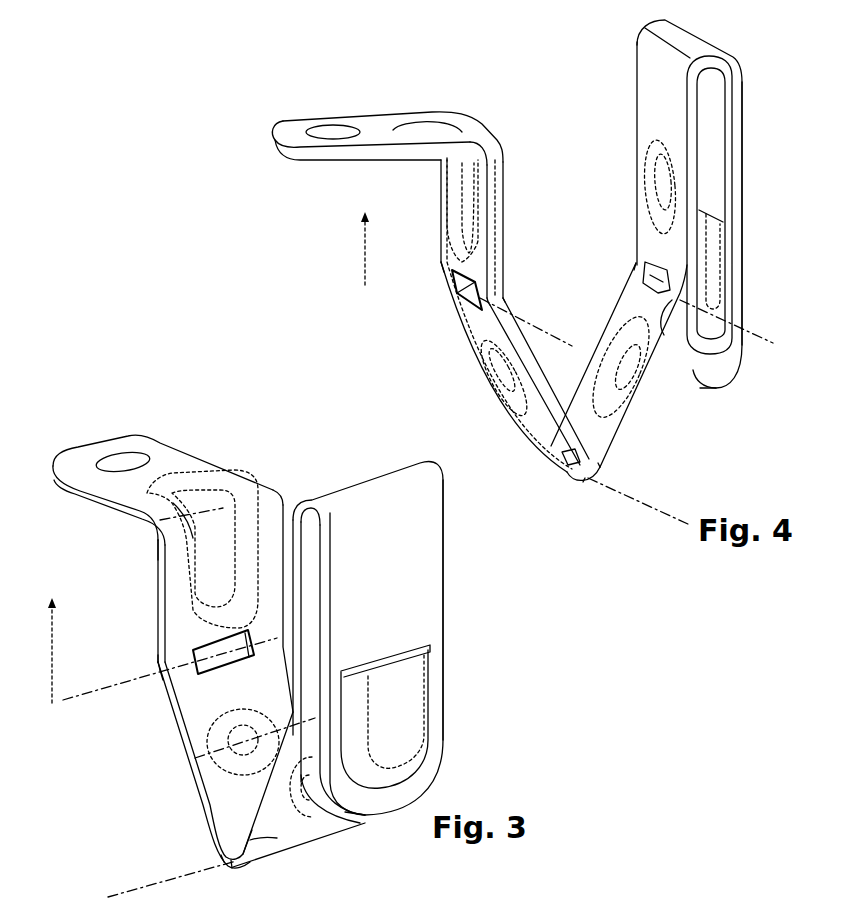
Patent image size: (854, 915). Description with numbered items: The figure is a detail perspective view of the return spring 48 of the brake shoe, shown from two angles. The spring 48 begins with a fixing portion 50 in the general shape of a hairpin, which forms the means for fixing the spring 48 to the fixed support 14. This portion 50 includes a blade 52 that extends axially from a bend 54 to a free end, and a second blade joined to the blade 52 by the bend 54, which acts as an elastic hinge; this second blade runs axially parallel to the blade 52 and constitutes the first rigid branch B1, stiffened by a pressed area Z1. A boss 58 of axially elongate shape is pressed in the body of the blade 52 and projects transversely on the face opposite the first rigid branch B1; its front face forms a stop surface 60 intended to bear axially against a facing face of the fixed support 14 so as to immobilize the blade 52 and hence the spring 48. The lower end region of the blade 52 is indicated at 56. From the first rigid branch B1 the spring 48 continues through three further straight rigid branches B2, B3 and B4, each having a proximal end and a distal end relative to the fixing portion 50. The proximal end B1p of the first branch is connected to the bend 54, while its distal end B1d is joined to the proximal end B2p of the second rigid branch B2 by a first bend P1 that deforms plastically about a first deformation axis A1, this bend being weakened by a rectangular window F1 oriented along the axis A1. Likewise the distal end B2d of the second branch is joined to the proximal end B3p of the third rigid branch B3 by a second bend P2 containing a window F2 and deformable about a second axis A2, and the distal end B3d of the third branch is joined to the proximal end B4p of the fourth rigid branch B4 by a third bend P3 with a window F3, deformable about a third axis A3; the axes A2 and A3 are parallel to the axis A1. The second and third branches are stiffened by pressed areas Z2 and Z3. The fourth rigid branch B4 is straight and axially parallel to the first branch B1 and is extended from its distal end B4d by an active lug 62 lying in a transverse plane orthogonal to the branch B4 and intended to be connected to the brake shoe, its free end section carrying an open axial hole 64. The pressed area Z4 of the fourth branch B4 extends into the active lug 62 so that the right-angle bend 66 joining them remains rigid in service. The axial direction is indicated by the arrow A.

In FIG. 4, the fixed support 14 is at (116, 2).
In FIG. 4, the return spring 48 is at (535, 105).
In FIG. 3, the return spring 48 is at (326, 455).
In FIG. 4, the fixing portion 50 is at (752, 80).
In FIG. 3, the fixing portion 50 is at (368, 638).
In FIG. 4, the blade 52 is at (757, 148).
In FIG. 3, the blade 52 is at (460, 610).
In FIG. 4, the bend 54 is at (690, 58).
In FIG. 3, the bend 54 is at (390, 470).
In FIG. 4, the clip lower end 56 is at (722, 388).
In FIG. 4, the boss 58 is at (714, 287).
In FIG. 3, the boss 58 is at (398, 690).
In FIG. 4, the stop surface 60 is at (742, 217).
In FIG. 3, the stop surface 60 is at (427, 648).
In FIG. 4, the active lug 62 is at (366, 104).
In FIG. 3, the active lug 62 is at (172, 445).
In FIG. 4, the open axial hole 64 is at (333, 130).
In FIG. 3, the open axial hole 64 is at (123, 460).
In FIG. 4, the right-angle bend 66 is at (500, 152).
In FIG. 3, the right-angle bend 66 is at (267, 486).
In FIG. 4, the direction A is at (357, 248).
In FIG. 3, the direction A is at (44, 650).
In FIG. 4, the first deformation axis A1 is at (752, 338).
In FIG. 3, the first deformation axis A1 is at (260, 713).
In FIG. 4, the second deformation axis A2 is at (665, 520).
In FIG. 3, the second deformation axis A2 is at (115, 892).
In FIG. 4, the third deformation axis A3 is at (555, 333).
In FIG. 3, the third deformation axis A3 is at (80, 697).
In FIG. 4, the first rigid branch B1 is at (628, 133).
In FIG. 3, the first rigid branch B1 is at (320, 582).
In FIG. 4, the proximal end of the first rigid branch B1p is at (686, 152).
In FIG. 3, the proximal end of the first rigid branch B1p is at (297, 565).
In FIG. 4, the distal end of the first rigid branch B1d is at (692, 275).
In FIG. 3, the distal end of the first rigid branch B1d is at (337, 657).
In FIG. 4, the second rigid branch B2 is at (625, 295).
In FIG. 3, the second rigid branch B2 is at (210, 837).
In FIG. 4, the proximal end of the second rigid branch B2p is at (662, 318).
In FIG. 3, the proximal end of the second rigid branch B2p is at (235, 807).
In FIG. 4, the distal end of the second rigid branch B2d is at (625, 465).
In FIG. 3, the distal end of the second rigid branch B2d is at (277, 838).
In FIG. 4, the third rigid branch B3 is at (505, 435).
In FIG. 3, the third rigid branch B3 is at (170, 772).
In FIG. 4, the proximal end of the third rigid branch B3p is at (560, 462).
In FIG. 3, the proximal end of the third rigid branch B3p is at (222, 857).
In FIG. 4, the distal end of the third rigid branch B3d is at (492, 322).
In FIG. 3, the distal end of the third rigid branch B3d is at (160, 683).
In FIG. 4, the fourth rigid branch B4 is at (425, 245).
In FIG. 3, the fourth rigid branch B4 is at (145, 610).
In FIG. 4, the proximal end of the fourth rigid branch B4p is at (488, 290).
In FIG. 3, the proximal end of the fourth rigid branch B4p is at (157, 657).
In FIG. 4, the distal end of the fourth rigid branch B4d is at (483, 183).
In FIG. 3, the distal end of the fourth rigid branch B4d is at (155, 560).
In FIG. 4, the window F1 is at (648, 262).
In FIG. 4, the window F2 is at (580, 470).
In FIG. 4, the window F3 is at (458, 290).
In FIG. 3, the window F3 is at (228, 645).
In FIG. 4, the first bend P1 is at (634, 280).
In FIG. 3, the first bend P1 is at (312, 742).
In FIG. 4, the second bend P2 is at (586, 484).
In FIG. 3, the second bend P2 is at (232, 868).
In FIG. 4, the third bend P3 is at (445, 272).
In FIG. 3, the third bend P3 is at (163, 698).
In FIG. 4, the pressed area Z1 is at (658, 185).
In FIG. 4, the pressed area Z2 is at (625, 365).
In FIG. 3, the pressed area Z2 is at (312, 805).
In FIG. 4, the pressed area Z3 is at (494, 385).
In FIG. 3, the pressed area Z3 is at (240, 735).
In FIG. 4, the pressed area Z4 is at (450, 195).
In FIG. 3, the pressed area Z4 is at (205, 520).